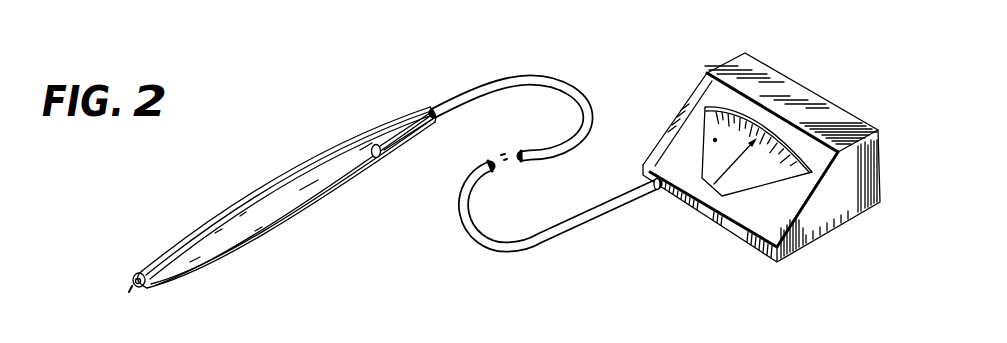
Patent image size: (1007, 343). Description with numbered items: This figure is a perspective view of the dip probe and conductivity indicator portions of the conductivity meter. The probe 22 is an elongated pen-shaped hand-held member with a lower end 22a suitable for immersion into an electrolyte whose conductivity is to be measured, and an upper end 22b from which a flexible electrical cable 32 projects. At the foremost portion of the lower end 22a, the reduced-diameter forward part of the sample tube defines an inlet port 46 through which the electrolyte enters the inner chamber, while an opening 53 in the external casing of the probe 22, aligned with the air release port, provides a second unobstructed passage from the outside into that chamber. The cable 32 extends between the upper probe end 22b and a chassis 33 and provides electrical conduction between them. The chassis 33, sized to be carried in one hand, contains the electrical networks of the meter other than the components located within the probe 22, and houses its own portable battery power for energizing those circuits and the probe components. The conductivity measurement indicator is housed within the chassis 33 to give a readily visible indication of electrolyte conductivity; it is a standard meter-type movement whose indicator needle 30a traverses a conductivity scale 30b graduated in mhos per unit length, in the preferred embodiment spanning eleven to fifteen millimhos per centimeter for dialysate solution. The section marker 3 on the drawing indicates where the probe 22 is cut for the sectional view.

The probe 22 is at (305, 215).
The lower end 22a is at (190, 274).
The upper end 22b is at (424, 104).
The inlet port 46 is at (129, 298).
The opening 53 is at (384, 156).
The flexible electrical cable 32 is at (522, 177).
The chassis 33 is at (683, 122).
The indicator needle 30a is at (740, 164).
The conductivity scale 30b is at (776, 145).
The section line for FIG. 3 is at (446, 110).